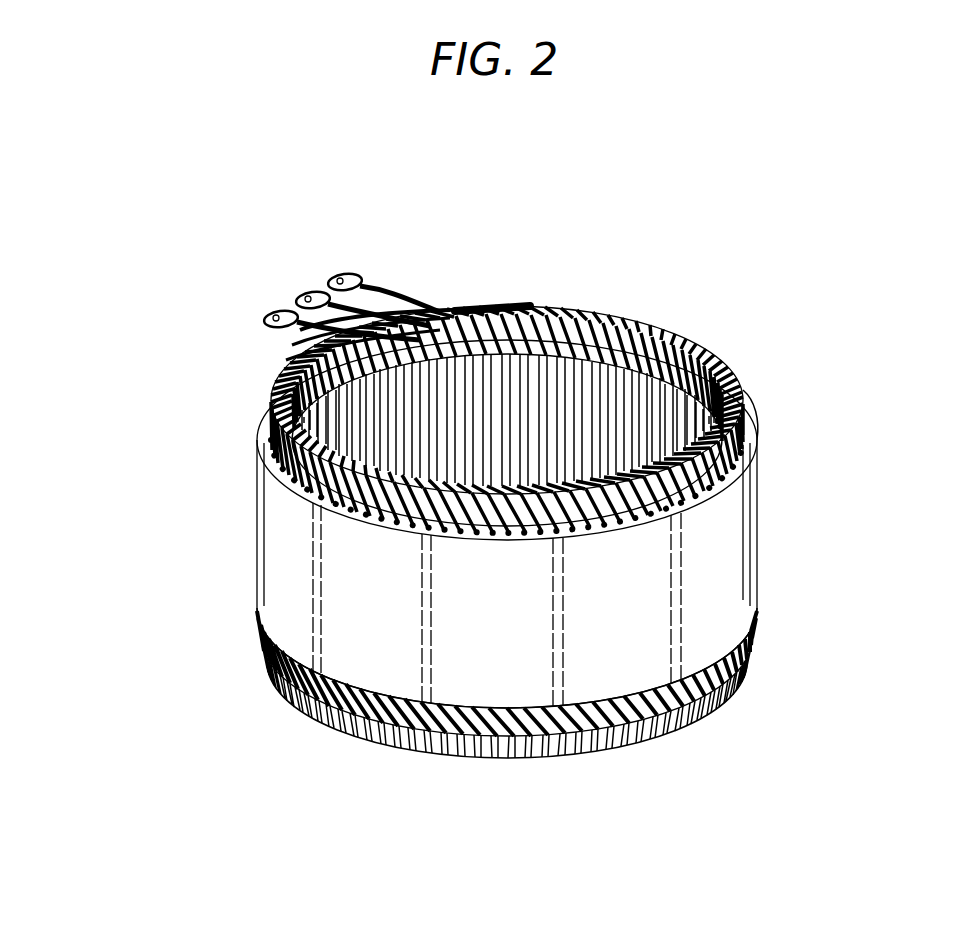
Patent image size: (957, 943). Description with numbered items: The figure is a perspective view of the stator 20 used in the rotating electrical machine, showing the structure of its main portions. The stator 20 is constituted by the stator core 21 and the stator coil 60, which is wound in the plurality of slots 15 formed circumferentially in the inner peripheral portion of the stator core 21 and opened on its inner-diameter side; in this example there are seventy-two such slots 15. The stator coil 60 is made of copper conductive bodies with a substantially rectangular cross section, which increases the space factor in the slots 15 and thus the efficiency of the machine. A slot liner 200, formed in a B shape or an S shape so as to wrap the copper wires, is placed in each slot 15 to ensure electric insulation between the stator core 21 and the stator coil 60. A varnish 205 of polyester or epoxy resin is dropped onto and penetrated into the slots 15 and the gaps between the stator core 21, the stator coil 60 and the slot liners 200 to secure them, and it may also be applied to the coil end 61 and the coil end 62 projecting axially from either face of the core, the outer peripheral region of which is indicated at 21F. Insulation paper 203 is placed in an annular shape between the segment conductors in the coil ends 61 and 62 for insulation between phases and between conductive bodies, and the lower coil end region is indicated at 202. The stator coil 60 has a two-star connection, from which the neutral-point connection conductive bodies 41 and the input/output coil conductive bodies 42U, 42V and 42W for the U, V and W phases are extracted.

The slot 15 is at (460, 303).
The stator 20 is at (207, 731).
The stator core 21 is at (753, 547).
The outer peripheral surface of stator core 21F is at (753, 437).
The neutral-point connection conductive body 41 is at (522, 305).
The U-phase input/output coil conductive body 42U is at (257, 323).
The V-phase input/output coil conductive body 42V is at (290, 300).
The W-phase input/output coil conductive body 42W is at (325, 272).
The stator coil 60 is at (320, 490).
The coil end 61 is at (743, 387).
The coil end 62 is at (723, 703).
The slot liner 200 is at (643, 327).
The lower coil end 202 is at (660, 735).
The insulation paper 203 is at (562, 757).
The varnish 205 is at (585, 313).